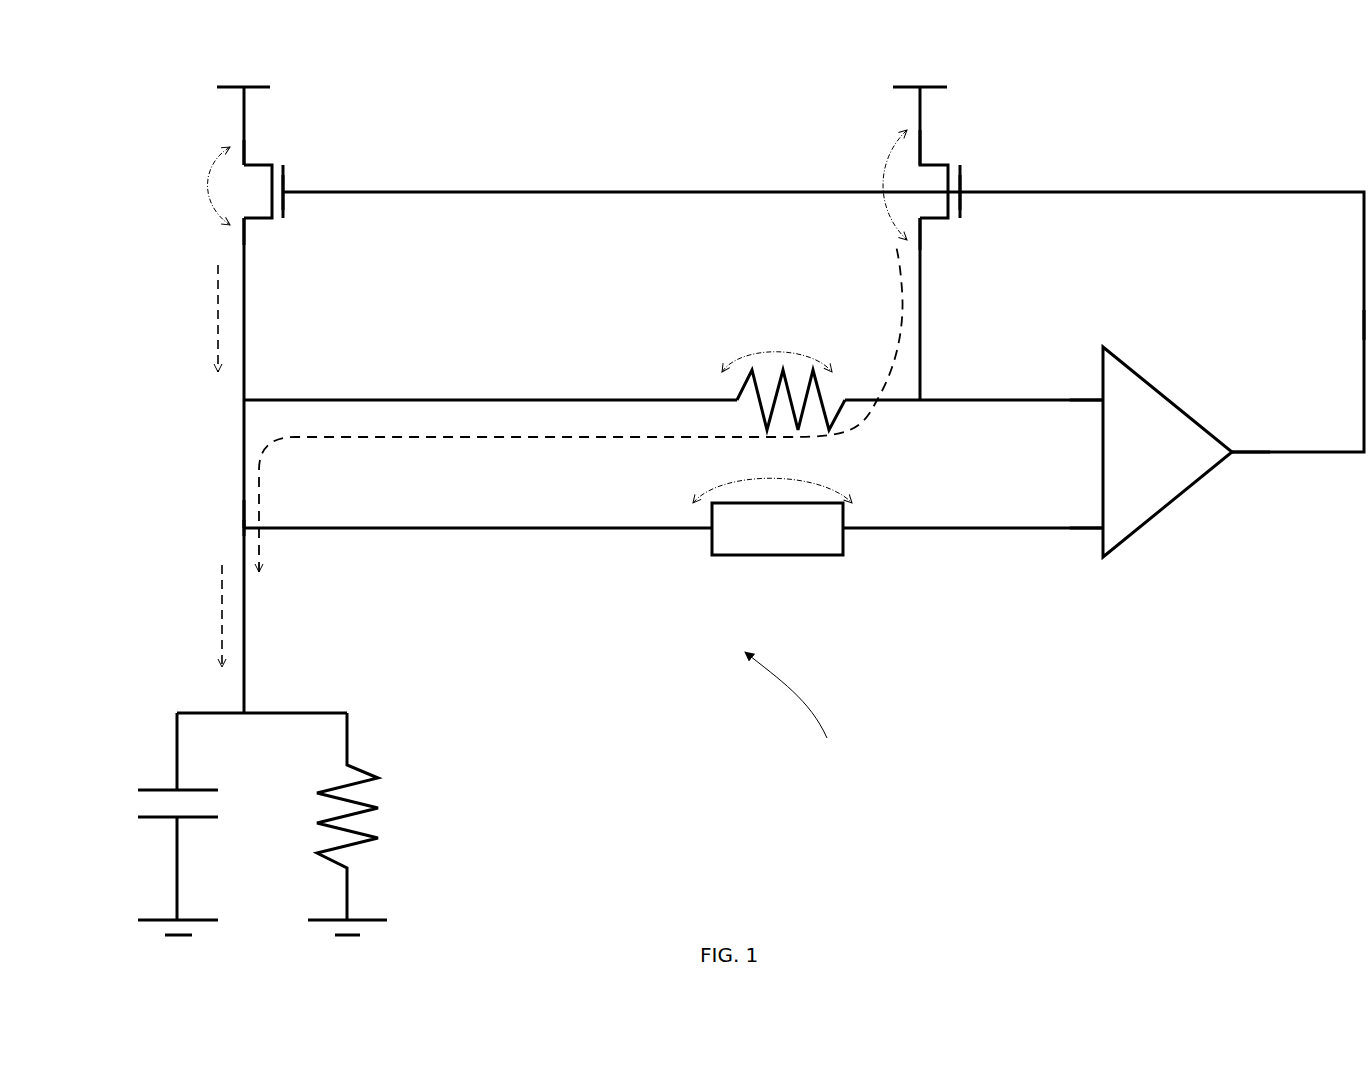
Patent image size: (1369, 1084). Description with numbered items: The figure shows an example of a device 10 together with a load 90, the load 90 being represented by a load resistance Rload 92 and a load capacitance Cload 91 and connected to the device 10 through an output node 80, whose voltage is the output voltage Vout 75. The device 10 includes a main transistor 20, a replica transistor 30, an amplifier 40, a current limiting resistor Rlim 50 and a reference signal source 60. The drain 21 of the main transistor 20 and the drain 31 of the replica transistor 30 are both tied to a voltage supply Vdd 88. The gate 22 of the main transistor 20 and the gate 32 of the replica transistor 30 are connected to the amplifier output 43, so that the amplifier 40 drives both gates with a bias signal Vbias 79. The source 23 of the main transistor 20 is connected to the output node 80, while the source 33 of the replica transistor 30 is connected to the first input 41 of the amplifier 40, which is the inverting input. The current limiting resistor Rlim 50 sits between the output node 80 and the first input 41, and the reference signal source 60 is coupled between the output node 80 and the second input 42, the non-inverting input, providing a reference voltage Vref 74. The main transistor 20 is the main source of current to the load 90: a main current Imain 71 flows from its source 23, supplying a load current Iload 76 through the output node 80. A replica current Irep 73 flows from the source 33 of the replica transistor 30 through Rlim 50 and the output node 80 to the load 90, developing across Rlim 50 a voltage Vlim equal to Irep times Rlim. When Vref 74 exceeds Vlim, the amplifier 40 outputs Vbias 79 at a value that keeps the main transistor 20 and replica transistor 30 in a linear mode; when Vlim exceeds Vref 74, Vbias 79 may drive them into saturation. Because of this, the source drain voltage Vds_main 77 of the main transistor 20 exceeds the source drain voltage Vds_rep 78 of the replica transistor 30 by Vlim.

The device 10 is at (807, 721).
The main transistor 20 is at (292, 148).
The drain 21 is at (247, 160).
The gate 22 is at (288, 195).
The source 23 is at (243, 228).
The replica transistor 30 is at (965, 142).
The drain 31 is at (922, 160).
The gate 32 is at (968, 190).
The source 33 is at (927, 220).
The amplifier 40 is at (1180, 462).
The first input 41 is at (1100, 397).
The second input 42 is at (1100, 537).
The amplifier output 43 is at (1234, 453).
The current limiting resistor Rlim 50 is at (757, 407).
The reference signal source 60 is at (817, 541).
The main current Imain 71 is at (170, 318).
The replica current Irep 73 is at (581, 407).
The reference voltage Vref 74 is at (772, 477).
The output voltage Vout 75 is at (243, 528).
The load current Iload 76 is at (177, 616).
The source drain voltage Vds_main 77 is at (151, 186).
The source drain voltage Vds_rep 78 is at (834, 185).
The bias signal Vbias 79 is at (1362, 322).
The output node 80 is at (243, 528).
The voltage supply Vdd 88 is at (562, 67).
The load 90 is at (288, 772).
The load capacitance Cload 91 is at (157, 790).
The load resistance Rload 92 is at (368, 770).